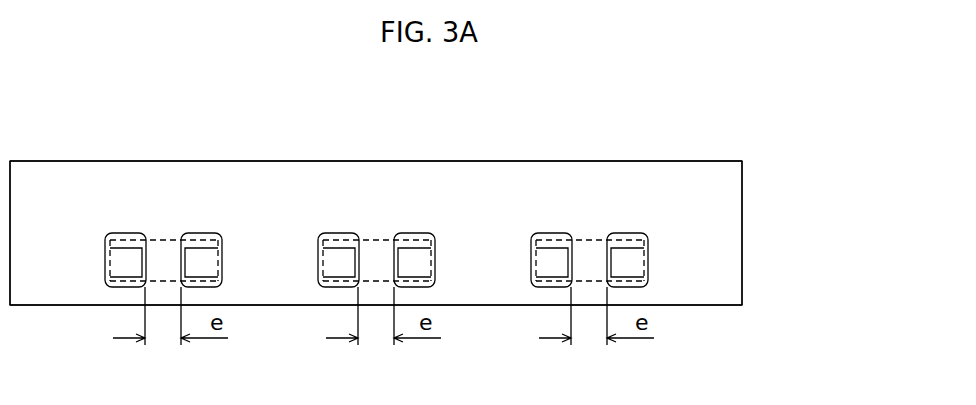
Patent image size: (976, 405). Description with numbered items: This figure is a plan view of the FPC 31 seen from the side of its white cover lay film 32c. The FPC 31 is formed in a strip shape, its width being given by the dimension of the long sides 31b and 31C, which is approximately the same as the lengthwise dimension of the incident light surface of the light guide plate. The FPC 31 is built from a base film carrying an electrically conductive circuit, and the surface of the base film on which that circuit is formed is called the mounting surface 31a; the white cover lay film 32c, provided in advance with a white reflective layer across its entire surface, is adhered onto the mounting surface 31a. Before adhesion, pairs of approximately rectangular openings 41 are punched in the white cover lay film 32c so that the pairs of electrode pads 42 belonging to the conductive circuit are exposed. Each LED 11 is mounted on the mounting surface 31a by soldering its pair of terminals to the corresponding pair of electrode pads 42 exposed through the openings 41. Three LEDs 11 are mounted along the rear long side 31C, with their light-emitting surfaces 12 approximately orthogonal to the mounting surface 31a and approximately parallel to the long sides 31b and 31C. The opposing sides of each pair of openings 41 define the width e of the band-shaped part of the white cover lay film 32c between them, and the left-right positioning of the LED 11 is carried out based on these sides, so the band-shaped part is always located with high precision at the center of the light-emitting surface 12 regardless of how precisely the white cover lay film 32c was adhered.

The LED 11 is at (163, 253).
The light-emitting surface 12 is at (157, 239).
The FPC 31 is at (746, 204).
The mounting surface 31a is at (110, 283).
The long side 31b is at (700, 160).
The long side 31C is at (712, 306).
The white cover lay film 32c is at (718, 258).
The opening 41 is at (123, 233).
The electrode pad 42 is at (250, 342).